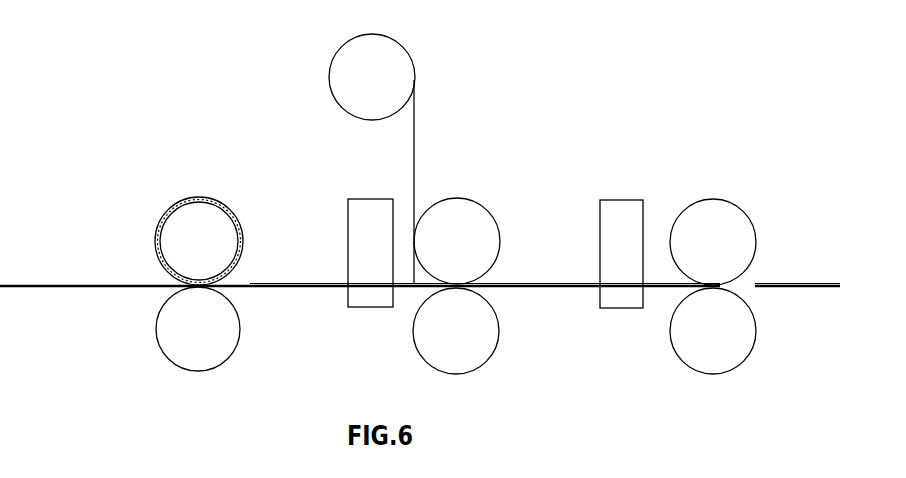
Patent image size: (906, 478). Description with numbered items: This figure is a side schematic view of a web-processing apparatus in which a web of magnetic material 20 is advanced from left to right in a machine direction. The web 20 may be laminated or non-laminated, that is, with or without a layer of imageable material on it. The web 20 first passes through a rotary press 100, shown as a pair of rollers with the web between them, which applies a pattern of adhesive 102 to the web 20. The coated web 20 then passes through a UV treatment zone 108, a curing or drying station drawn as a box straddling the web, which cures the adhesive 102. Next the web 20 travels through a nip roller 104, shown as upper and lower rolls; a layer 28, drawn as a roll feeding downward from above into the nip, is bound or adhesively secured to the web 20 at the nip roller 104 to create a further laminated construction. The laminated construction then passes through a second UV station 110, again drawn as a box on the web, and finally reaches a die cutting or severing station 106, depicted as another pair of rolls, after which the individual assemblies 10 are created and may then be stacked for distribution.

The individual assembly 10 is at (798, 285).
The web of magnetic material 20 is at (87, 288).
The layer 28 is at (415, 80).
The rotary press 100 is at (200, 198).
The pattern of adhesive 102 is at (295, 283).
The nip roller 104 is at (457, 198).
The die cutting or severing station 106 is at (713, 200).
The UV treatment zone 108 is at (370, 199).
The second UV station 110 is at (623, 200).